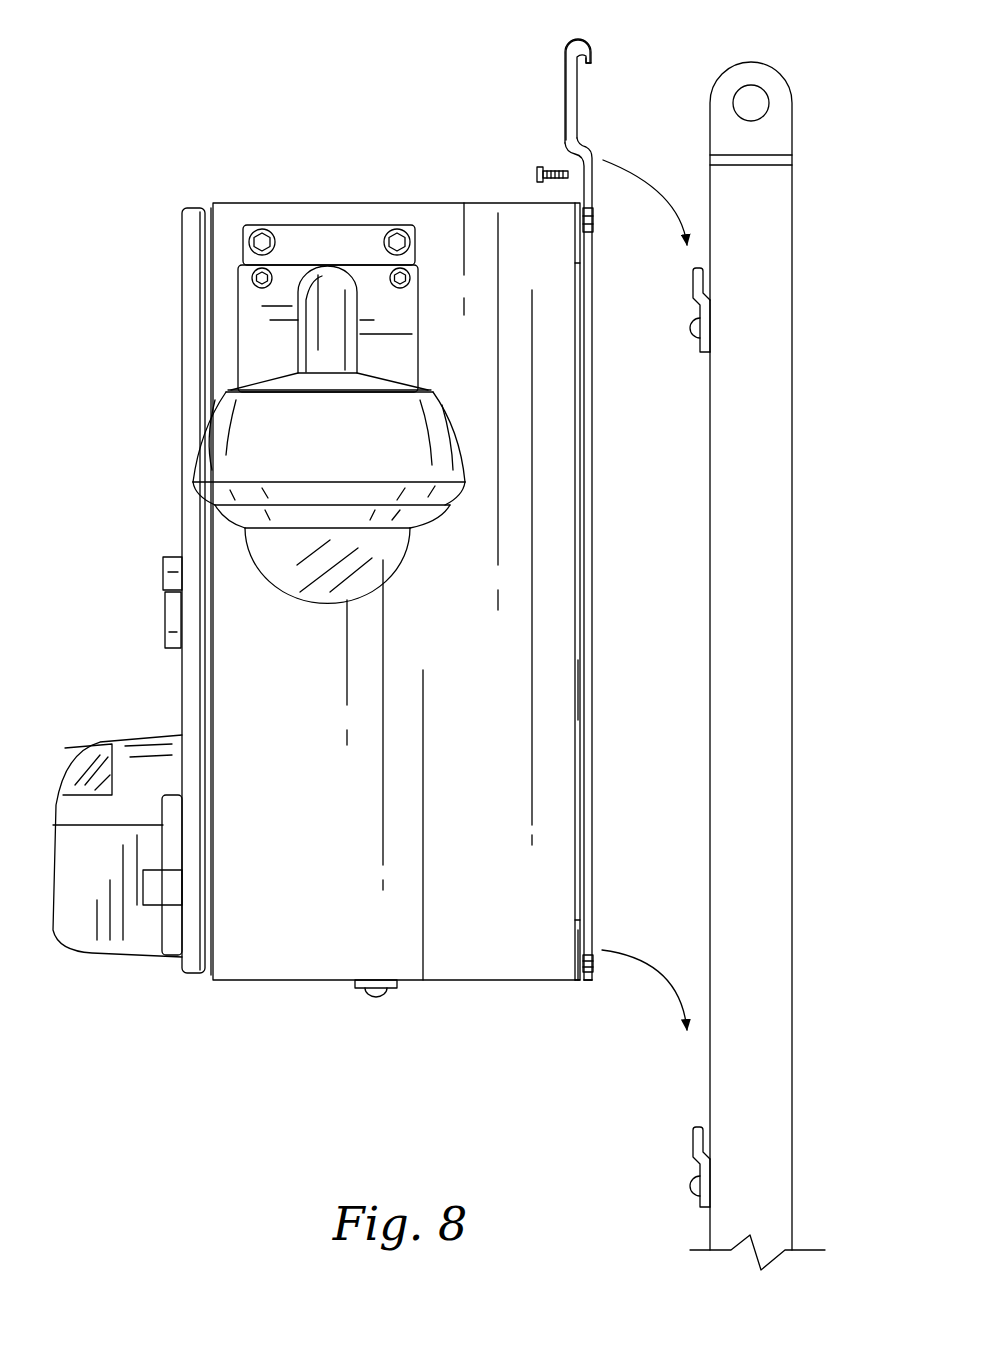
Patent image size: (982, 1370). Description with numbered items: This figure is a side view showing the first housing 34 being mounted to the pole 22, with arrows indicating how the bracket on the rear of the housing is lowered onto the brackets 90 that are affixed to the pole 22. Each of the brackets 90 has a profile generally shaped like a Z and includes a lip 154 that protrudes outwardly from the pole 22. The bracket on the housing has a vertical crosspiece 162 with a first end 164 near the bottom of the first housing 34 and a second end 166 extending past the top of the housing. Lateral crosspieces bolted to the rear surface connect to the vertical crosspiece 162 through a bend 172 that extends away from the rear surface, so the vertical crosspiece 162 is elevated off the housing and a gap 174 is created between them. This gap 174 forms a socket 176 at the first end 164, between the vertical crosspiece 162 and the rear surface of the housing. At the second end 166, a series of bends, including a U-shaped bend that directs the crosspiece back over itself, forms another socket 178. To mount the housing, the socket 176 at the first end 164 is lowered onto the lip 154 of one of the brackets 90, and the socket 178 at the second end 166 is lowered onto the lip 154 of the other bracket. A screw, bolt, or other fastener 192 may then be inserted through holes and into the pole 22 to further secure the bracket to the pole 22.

The pole 22 is at (780, 582).
The first housing 34 is at (325, 212).
The brackets 90 is at (718, 335).
The lip 154 is at (693, 290).
The vertical crosspiece 162 is at (589, 688).
The first end 164 is at (599, 978).
The second end 166 is at (550, 53).
The bend 172 is at (577, 951).
The gap 174 is at (578, 688).
The socket 176 is at (578, 992).
The socket 178 is at (583, 70).
The fastener 192 is at (533, 174).